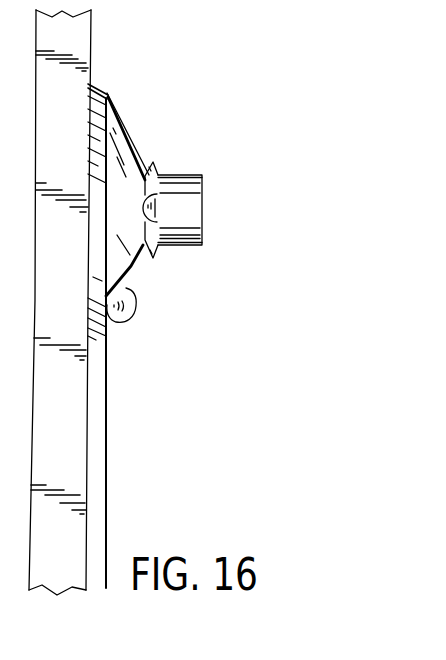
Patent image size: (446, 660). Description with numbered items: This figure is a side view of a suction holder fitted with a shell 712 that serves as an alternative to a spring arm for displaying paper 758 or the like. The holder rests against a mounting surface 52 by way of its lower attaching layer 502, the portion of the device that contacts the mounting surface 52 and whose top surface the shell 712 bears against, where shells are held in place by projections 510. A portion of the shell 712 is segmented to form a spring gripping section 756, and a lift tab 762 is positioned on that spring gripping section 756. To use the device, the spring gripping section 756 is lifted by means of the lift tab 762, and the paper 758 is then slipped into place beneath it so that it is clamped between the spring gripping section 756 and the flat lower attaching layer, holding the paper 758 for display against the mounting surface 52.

The mounting surface 52 is at (90, 49).
The lower attaching layer 502 is at (100, 88).
The shell 712 is at (128, 130).
The projections 510 is at (155, 163).
The spring gripping section 756 is at (133, 267).
The lift tab 762 is at (135, 307).
The paper 758 is at (106, 495).